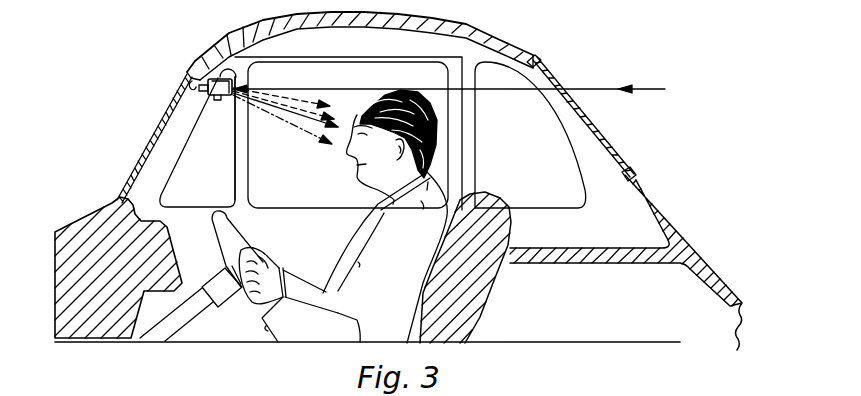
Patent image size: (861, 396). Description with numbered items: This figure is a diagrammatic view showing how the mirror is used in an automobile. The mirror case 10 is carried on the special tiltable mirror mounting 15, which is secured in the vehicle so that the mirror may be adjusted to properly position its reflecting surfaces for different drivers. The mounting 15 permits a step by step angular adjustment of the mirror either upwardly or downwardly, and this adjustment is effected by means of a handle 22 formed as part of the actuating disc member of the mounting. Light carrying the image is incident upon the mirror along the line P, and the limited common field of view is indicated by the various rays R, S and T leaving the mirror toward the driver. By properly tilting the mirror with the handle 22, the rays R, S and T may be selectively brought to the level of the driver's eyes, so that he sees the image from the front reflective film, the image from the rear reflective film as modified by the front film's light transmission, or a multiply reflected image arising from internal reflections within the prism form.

The case 10 is at (208, 96).
The tiltable mirror mounting 15 is at (199, 88).
The handle 22 is at (217, 97).
The incident light line P is at (413, 90).
The ray R is at (290, 99).
The ray S is at (289, 110).
The ray T is at (282, 126).